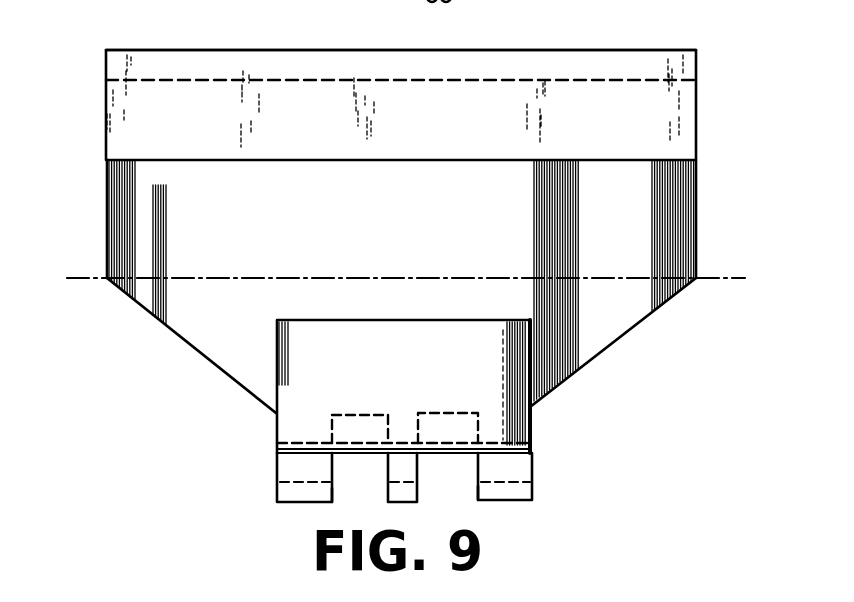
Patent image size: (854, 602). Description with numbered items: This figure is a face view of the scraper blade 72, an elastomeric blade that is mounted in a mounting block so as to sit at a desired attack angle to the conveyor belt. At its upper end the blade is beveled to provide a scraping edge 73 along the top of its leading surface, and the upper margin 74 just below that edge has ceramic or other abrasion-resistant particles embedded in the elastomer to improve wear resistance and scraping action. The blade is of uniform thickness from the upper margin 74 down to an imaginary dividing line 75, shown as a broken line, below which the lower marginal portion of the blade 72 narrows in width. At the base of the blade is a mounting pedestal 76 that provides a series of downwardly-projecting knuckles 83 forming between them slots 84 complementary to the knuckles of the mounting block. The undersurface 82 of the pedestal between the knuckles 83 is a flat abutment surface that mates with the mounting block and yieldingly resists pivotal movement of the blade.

The blade 72 is at (113, 121).
The scraping edge 73 is at (623, 48).
The upper margin 74 is at (673, 110).
The dividing line 75 is at (712, 276).
The mounting pedestal 76 is at (298, 398).
The undersurface 82 is at (353, 421).
The knuckles 83 is at (290, 470).
The slots 84 is at (332, 489).